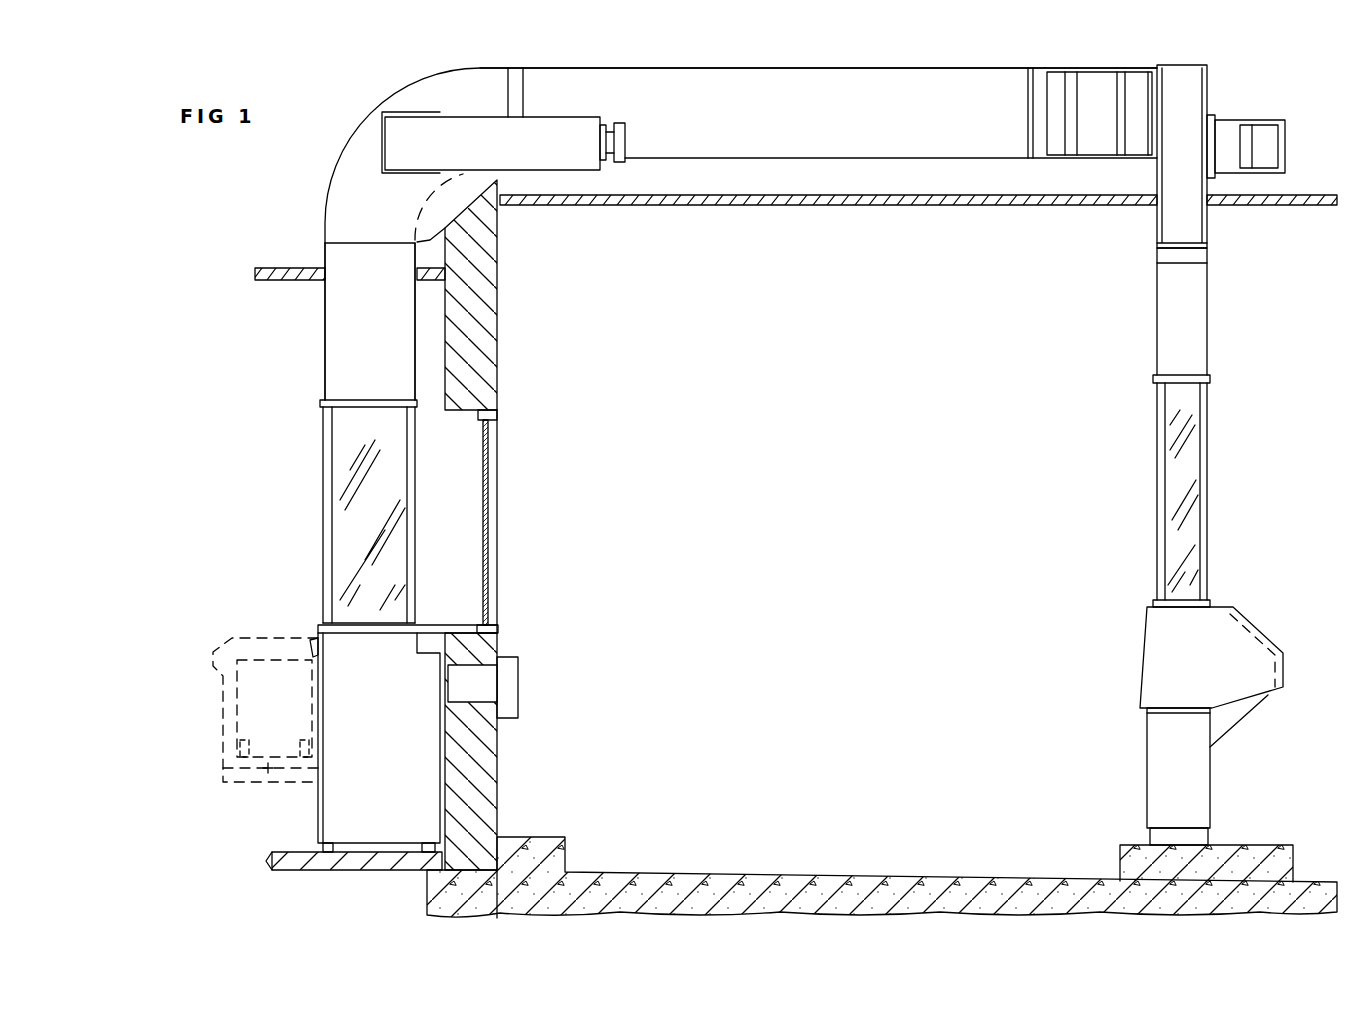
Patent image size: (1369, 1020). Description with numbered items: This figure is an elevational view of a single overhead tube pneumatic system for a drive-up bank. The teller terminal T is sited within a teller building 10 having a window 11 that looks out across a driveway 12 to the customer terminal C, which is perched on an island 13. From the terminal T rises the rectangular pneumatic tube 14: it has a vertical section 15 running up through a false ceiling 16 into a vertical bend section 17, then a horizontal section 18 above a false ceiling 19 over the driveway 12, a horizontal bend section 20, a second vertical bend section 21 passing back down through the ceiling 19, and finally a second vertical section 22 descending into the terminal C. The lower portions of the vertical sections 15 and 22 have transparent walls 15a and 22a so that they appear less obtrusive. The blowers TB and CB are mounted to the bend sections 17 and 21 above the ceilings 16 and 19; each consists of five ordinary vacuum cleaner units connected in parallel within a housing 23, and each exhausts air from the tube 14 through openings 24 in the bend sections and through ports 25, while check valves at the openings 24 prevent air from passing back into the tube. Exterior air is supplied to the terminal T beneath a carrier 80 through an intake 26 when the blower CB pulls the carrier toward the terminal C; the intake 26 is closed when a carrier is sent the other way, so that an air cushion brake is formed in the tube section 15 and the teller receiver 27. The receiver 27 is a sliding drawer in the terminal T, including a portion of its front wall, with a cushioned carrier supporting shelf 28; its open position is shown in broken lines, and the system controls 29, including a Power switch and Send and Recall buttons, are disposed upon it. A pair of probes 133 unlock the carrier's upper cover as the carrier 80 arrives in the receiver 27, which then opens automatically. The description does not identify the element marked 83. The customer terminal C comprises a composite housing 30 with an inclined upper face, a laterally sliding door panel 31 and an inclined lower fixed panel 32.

The teller building 10 is at (500, 337).
The window 11 is at (490, 511).
The driveway 12 is at (890, 877).
The island 13 is at (1285, 845).
The rectangular pneumatic tube 14 is at (832, 113).
The vertical section 15 is at (325, 355).
The transparent wall 15a is at (340, 520).
The false ceiling 16 is at (268, 268).
The vertical bend section 17 is at (340, 178).
The horizontal section 18 is at (840, 68).
The false ceiling 19 is at (895, 206).
The horizontal bend section 20 is at (1090, 72).
The second vertical bend section 21 is at (1195, 92).
The second vertical section 22 is at (1205, 318).
The transparent wall 22a is at (1200, 440).
The housing 23 is at (480, 118).
The opening 24 is at (405, 175).
The port 25 is at (621, 123).
The intake 26 is at (520, 688).
The teller receiver 27 is at (225, 728).
The cushioned carrier supporting platform or shelf 28 is at (266, 773).
The controls 29 is at (313, 640).
The composite housing 30 is at (1147, 735).
The laterally sliding door panel 31 is at (1258, 617).
The inclined lower fixed panel 32 is at (1240, 728).
The carrier 80 is at (300, 683).
The inner enclosure 83 is at (235, 686).
The probes 133 is at (303, 740).
The blower CB is at (1287, 143).